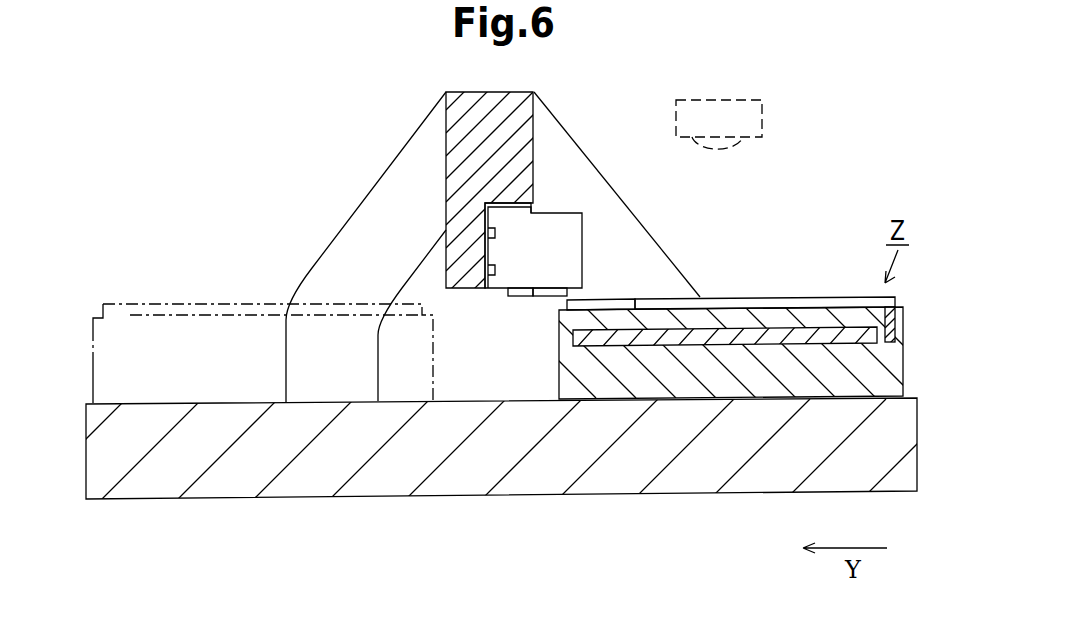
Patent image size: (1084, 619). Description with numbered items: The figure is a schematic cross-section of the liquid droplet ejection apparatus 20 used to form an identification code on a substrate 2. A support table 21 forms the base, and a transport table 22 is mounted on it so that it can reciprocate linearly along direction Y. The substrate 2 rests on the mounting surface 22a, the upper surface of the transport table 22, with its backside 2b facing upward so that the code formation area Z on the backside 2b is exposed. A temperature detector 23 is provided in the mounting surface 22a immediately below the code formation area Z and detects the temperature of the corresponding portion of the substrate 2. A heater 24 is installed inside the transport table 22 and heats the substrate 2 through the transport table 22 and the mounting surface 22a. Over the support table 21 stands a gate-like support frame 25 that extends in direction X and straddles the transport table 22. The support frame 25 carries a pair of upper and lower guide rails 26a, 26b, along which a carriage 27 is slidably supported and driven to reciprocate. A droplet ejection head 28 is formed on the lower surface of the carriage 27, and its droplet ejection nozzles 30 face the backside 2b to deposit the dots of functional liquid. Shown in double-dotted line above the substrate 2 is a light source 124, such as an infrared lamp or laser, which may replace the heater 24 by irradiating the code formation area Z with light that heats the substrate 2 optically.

The substrate 2 is at (197, 303).
The backside of the substrate 2b is at (804, 296).
The liquid droplet ejection apparatus 20 is at (805, 156).
The support table 21 is at (917, 470).
The transport table 22 is at (92, 336).
The mounting surface 22a is at (640, 297).
The temperature detector 23 is at (897, 325).
The heater 24 is at (573, 340).
The support frame 25 is at (526, 87).
The upper guide rail 26a is at (496, 233).
The lower guide rail 26b is at (496, 270).
The carriage 27 is at (582, 258).
The droplet ejection head 28 is at (508, 302).
The droplet ejection nozzles 30 is at (537, 294).
The light source 124 is at (718, 98).